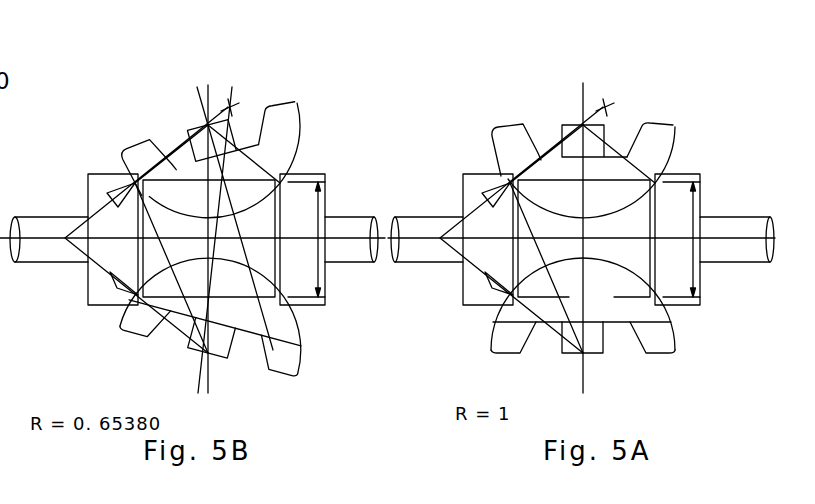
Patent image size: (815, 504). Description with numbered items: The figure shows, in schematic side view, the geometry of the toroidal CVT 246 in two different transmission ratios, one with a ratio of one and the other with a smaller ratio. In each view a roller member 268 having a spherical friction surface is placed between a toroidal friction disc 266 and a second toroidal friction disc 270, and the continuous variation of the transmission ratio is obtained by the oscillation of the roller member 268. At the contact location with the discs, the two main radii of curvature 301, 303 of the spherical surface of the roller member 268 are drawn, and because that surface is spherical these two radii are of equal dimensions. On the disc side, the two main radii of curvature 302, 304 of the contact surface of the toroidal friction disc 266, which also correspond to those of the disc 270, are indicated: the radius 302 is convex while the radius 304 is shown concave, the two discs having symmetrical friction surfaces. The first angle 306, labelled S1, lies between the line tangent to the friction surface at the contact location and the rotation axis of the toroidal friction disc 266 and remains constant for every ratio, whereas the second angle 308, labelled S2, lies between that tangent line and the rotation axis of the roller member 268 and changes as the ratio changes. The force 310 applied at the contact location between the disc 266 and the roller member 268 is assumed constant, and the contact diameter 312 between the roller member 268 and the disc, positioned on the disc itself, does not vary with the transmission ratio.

In FIG. 5A, the toroidal CVT 246 is at (678, 317).
In FIG. 5B, the toroidal CVT 246 is at (320, 327).
In FIG. 5A, the toroidal friction disc 266 is at (472, 178).
In FIG. 5B, the toroidal friction disc 266 is at (100, 180).
In FIG. 5A, the roller member 268 is at (593, 150).
In FIG. 5B, the roller member 268 is at (215, 125).
In FIG. 5A, the toroidal friction disc 270 is at (686, 187).
In FIG. 5B, the toroidal friction disc 270 is at (309, 187).
In FIG. 5A, the main radius of curvature 301 is at (537, 152).
In FIG. 5B, the main radius of curvature 301 is at (164, 147).
In FIG. 5A, the main radius of curvature 302 is at (465, 215).
In FIG. 5B, the main radius of curvature 302 is at (90, 217).
In FIG. 5A, the main radius of curvature 303 is at (625, 157).
In FIG. 5B, the main radius of curvature 303 is at (250, 157).
In FIG. 5A, the main radius of curvature 304 is at (528, 218).
In FIG. 5B, the main radius of curvature 304 is at (145, 212).
In FIG. 5A, the angle s1 306 is at (591, 196).
In FIG. 5B, the angle s1 306 is at (227, 184).
In FIG. 5A, the angle s2 308 is at (583, 305).
In FIG. 5B, the angle s2 308 is at (260, 337).
In FIG. 5A, the force 310 is at (472, 187).
In FIG. 5B, the force 310 is at (89, 187).
In FIG. 5A, the contact diameter 312 is at (681, 239).
In FIG. 5B, the contact diameter 312 is at (306, 239).
In FIG. 5A, the angle s1 S1 is at (545, 248).
In FIG. 5B, the angle s1 S1 is at (170, 247).
In FIG. 5A, the angle s2 S2 is at (583, 287).
In FIG. 5B, the angle s2 S2 is at (271, 349).